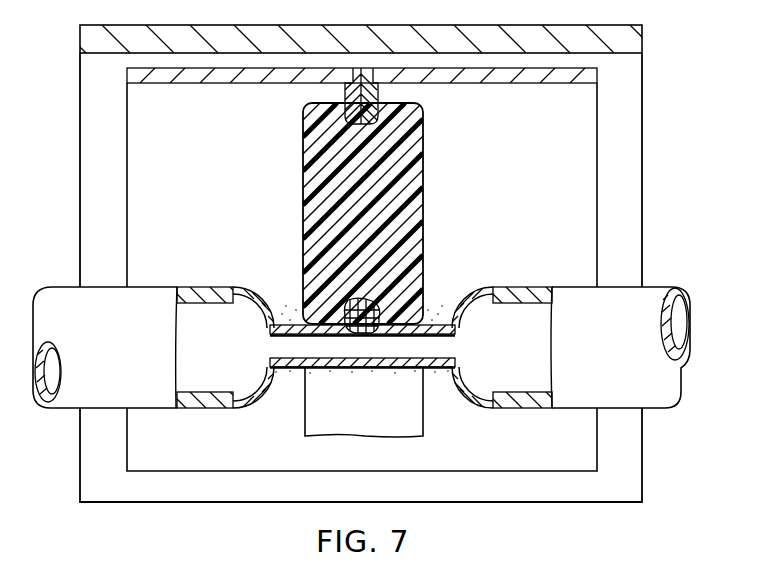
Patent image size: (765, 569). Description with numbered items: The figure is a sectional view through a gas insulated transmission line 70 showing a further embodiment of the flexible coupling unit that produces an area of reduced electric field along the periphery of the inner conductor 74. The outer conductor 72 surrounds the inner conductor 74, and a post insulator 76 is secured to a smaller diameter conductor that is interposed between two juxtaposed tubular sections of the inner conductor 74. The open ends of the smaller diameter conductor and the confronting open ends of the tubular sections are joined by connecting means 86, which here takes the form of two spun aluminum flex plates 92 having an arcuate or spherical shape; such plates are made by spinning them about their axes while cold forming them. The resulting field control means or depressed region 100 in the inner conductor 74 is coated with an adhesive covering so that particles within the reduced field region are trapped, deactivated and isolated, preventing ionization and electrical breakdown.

The gas insulated transmission line 70 is at (518, 17).
The outer conductor 72 is at (590, 30).
The inner conductor 74 is at (657, 292).
The post insulator 76 is at (423, 182).
The connecting means 86 is at (450, 292).
The spun aluminum flex plates 92 is at (267, 297).
The depressed region 100 is at (287, 318).